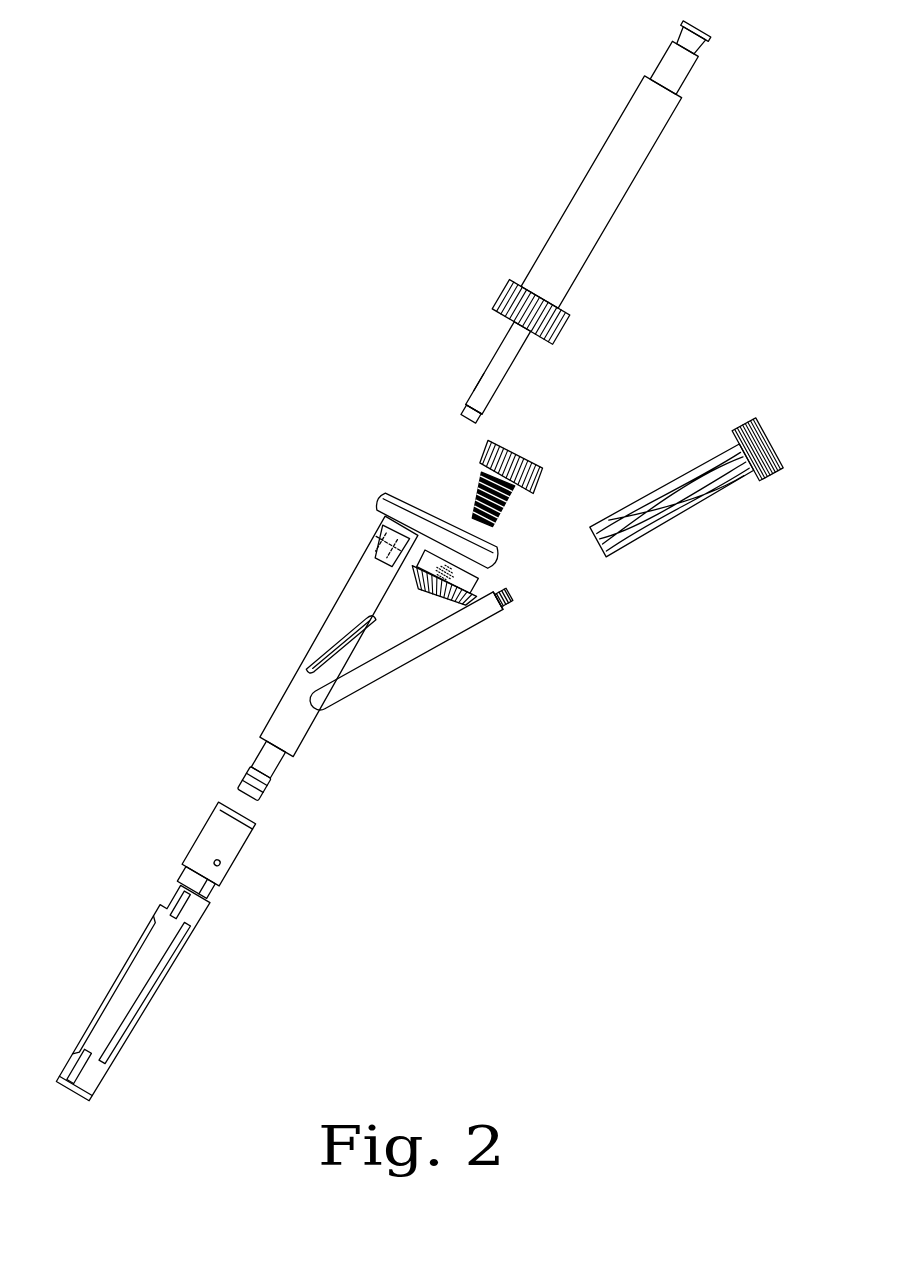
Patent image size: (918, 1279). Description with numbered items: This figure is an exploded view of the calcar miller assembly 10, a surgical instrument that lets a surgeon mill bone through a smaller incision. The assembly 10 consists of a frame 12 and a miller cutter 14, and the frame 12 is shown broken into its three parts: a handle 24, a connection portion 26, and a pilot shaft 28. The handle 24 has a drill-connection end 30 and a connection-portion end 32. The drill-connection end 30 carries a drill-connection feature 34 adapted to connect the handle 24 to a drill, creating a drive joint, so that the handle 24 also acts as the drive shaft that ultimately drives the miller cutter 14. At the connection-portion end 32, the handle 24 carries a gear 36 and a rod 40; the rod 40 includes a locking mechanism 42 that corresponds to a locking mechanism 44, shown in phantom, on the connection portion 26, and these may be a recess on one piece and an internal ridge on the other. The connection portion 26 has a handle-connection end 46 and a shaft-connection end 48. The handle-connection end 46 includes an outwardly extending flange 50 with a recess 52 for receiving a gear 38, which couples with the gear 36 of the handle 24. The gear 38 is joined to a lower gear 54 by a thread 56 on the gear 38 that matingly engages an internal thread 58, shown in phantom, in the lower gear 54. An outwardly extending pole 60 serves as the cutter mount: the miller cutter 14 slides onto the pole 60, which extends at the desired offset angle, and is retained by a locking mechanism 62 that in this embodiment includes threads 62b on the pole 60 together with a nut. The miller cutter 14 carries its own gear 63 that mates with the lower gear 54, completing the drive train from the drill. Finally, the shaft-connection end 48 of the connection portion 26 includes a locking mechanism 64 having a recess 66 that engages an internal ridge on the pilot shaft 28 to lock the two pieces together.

The calcar miller assembly 10 is at (222, 166).
The frame 12 is at (279, 379).
The miller cutter 14 is at (702, 518).
The handle 24 is at (521, 137).
The connection portion 26 is at (269, 603).
The pilot shaft 28 is at (92, 947).
The drill-connection end 30 is at (703, 52).
The connection-portion end 32 is at (505, 378).
The drill-connection feature 34 is at (711, 30).
The gear 36 is at (566, 332).
The gear 38 is at (515, 488).
The rod 40 is at (480, 383).
The locking mechanism 42 is at (462, 402).
The locking mechanism 44 is at (380, 538).
The handle-connection end 46 is at (362, 560).
The shaft-connection end 48 is at (262, 748).
The flange 50 is at (436, 505).
The recess 52 is at (503, 532).
The lower gear 54 is at (432, 600).
The thread 56 is at (489, 500).
The internal thread 58 is at (480, 580).
The outwardly extending pole 60 is at (440, 664).
The locking mechanism 62 is at (498, 600).
The threads 62b is at (504, 597).
The gear 63 is at (757, 449).
The locking mechanism 64 is at (248, 776).
The recess 66 is at (268, 784).